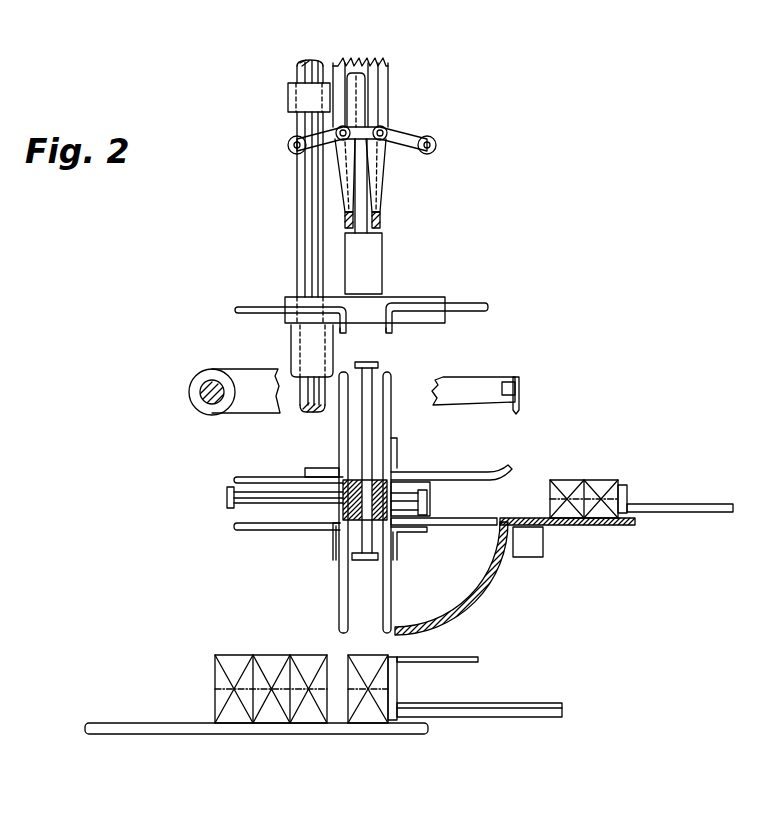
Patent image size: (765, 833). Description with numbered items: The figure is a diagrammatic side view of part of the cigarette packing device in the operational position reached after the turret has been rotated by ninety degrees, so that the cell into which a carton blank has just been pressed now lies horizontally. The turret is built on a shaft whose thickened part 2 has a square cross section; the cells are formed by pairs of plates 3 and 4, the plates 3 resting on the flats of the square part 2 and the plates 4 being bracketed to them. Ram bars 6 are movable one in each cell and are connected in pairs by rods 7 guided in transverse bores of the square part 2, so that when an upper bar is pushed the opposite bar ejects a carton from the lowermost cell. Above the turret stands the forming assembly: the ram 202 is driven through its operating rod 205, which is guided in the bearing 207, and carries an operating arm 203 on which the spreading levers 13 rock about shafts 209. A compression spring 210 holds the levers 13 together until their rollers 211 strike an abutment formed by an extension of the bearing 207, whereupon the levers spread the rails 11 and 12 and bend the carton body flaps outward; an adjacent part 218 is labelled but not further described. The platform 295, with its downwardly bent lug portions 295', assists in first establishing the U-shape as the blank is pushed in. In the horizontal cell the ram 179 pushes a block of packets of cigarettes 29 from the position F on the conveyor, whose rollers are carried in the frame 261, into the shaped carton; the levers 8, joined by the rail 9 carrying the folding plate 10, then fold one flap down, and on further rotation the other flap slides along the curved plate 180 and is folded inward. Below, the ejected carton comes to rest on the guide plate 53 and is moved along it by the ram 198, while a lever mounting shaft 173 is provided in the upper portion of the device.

The thickened part of the shaft 2 is at (348, 510).
The plates 3 is at (392, 422).
The plates 4 is at (342, 420).
The ram bars 6 is at (368, 366).
The rods 7 is at (367, 398).
The levers 8 is at (253, 402).
The rail 9 is at (518, 383).
The folding plate 10 is at (518, 393).
The spreading rail 11 is at (297, 218).
The spreading rail 12 is at (382, 222).
The spreading levers 13 is at (337, 161).
The block of packets of cigarettes 29 is at (570, 488).
The position on the conveyor belt F is at (598, 487).
The guide plate 53 is at (172, 735).
The lever mounting shaft 173 is at (208, 395).
The ram 179 is at (683, 505).
The curved plate 180 is at (475, 595).
The ram 198 is at (392, 681).
The ram 202 is at (366, 278).
The operating arm 203 is at (290, 96).
The operating rod 205 is at (296, 69).
The bearing 207 is at (297, 352).
The shafts 209 is at (382, 133).
The compression spring 210 is at (383, 64).
The rollers 211 is at (296, 145).
The member 218 is at (371, 87).
The frame 261 is at (530, 547).
The platform 295 is at (372, 303).
The downwardly bent lug portions 295' is at (426, 331).